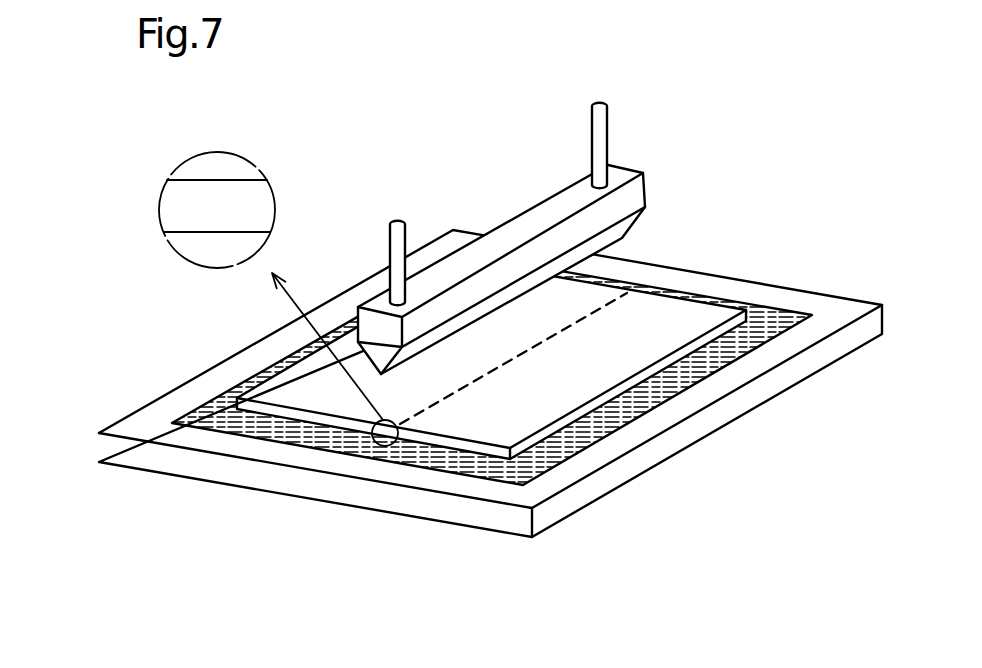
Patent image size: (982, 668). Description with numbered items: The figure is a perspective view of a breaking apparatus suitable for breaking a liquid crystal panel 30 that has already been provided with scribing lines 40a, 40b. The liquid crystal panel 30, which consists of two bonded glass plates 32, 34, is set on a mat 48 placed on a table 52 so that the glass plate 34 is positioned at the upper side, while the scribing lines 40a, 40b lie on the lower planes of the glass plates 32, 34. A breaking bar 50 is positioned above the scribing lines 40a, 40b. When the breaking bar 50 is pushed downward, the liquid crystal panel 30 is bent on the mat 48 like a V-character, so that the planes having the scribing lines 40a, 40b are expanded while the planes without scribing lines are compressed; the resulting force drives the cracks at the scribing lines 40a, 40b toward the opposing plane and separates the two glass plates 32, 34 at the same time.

The liquid crystal panel 30 is at (617, 377).
The glass plate 32 is at (152, 228).
The glass plate 34 is at (152, 186).
The scribing line 40a is at (443, 408).
The scribing line 40b is at (218, 202).
The mat 48 is at (582, 448).
The breaking bar 50 is at (681, 171).
The table 52 is at (782, 393).